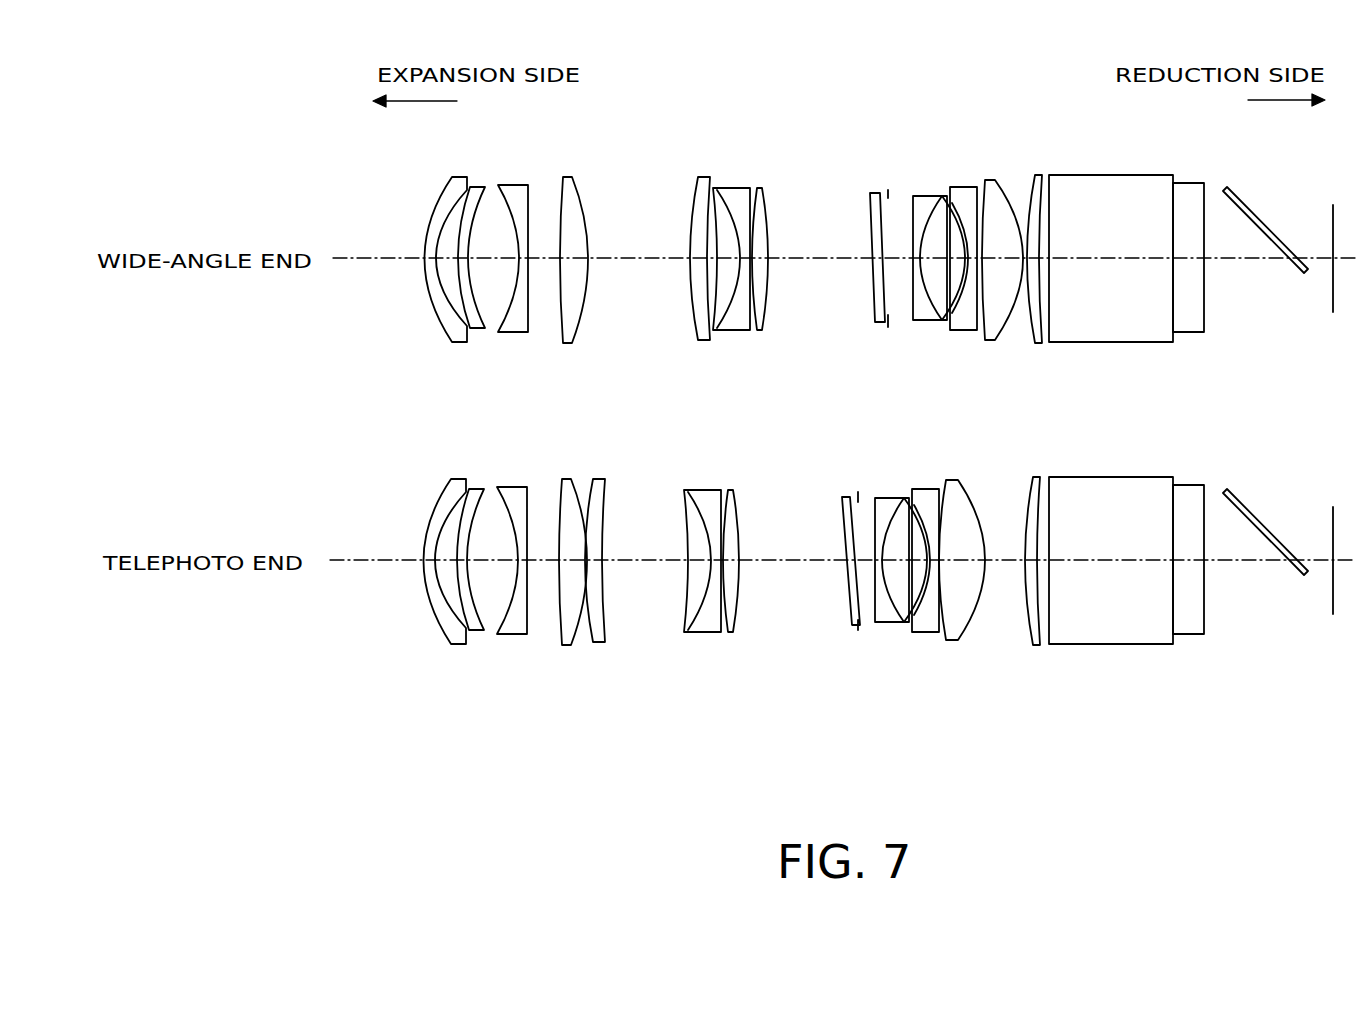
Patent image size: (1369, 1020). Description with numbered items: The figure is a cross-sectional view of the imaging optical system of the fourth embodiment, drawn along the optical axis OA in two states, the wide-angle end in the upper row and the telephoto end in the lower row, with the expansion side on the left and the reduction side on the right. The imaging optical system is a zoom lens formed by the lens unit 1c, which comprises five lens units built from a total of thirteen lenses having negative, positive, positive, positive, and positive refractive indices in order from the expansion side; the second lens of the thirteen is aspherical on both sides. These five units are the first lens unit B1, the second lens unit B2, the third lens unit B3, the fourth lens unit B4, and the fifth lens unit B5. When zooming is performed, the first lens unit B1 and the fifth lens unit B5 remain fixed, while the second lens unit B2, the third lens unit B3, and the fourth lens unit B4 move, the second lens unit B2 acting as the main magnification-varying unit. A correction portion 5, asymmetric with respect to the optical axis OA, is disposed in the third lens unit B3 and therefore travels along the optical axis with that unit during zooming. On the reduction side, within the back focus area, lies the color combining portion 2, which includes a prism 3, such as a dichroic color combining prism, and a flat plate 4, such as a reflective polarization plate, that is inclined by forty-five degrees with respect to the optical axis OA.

The lens unit 1c is at (731, 484).
The color combining portion 2 is at (1187, 460).
The prism 3 is at (1098, 192).
The flat plate 4 is at (1248, 216).
The correction portion 5 is at (868, 217).
The optical axis OA is at (627, 258).
The first lens unit B1 is at (425, 352).
The second lens unit B2 is at (673, 352).
The third lens unit B3 is at (903, 352).
The fourth lens unit B4 is at (1018, 352).
The fifth lens unit B5 is at (1020, 352).